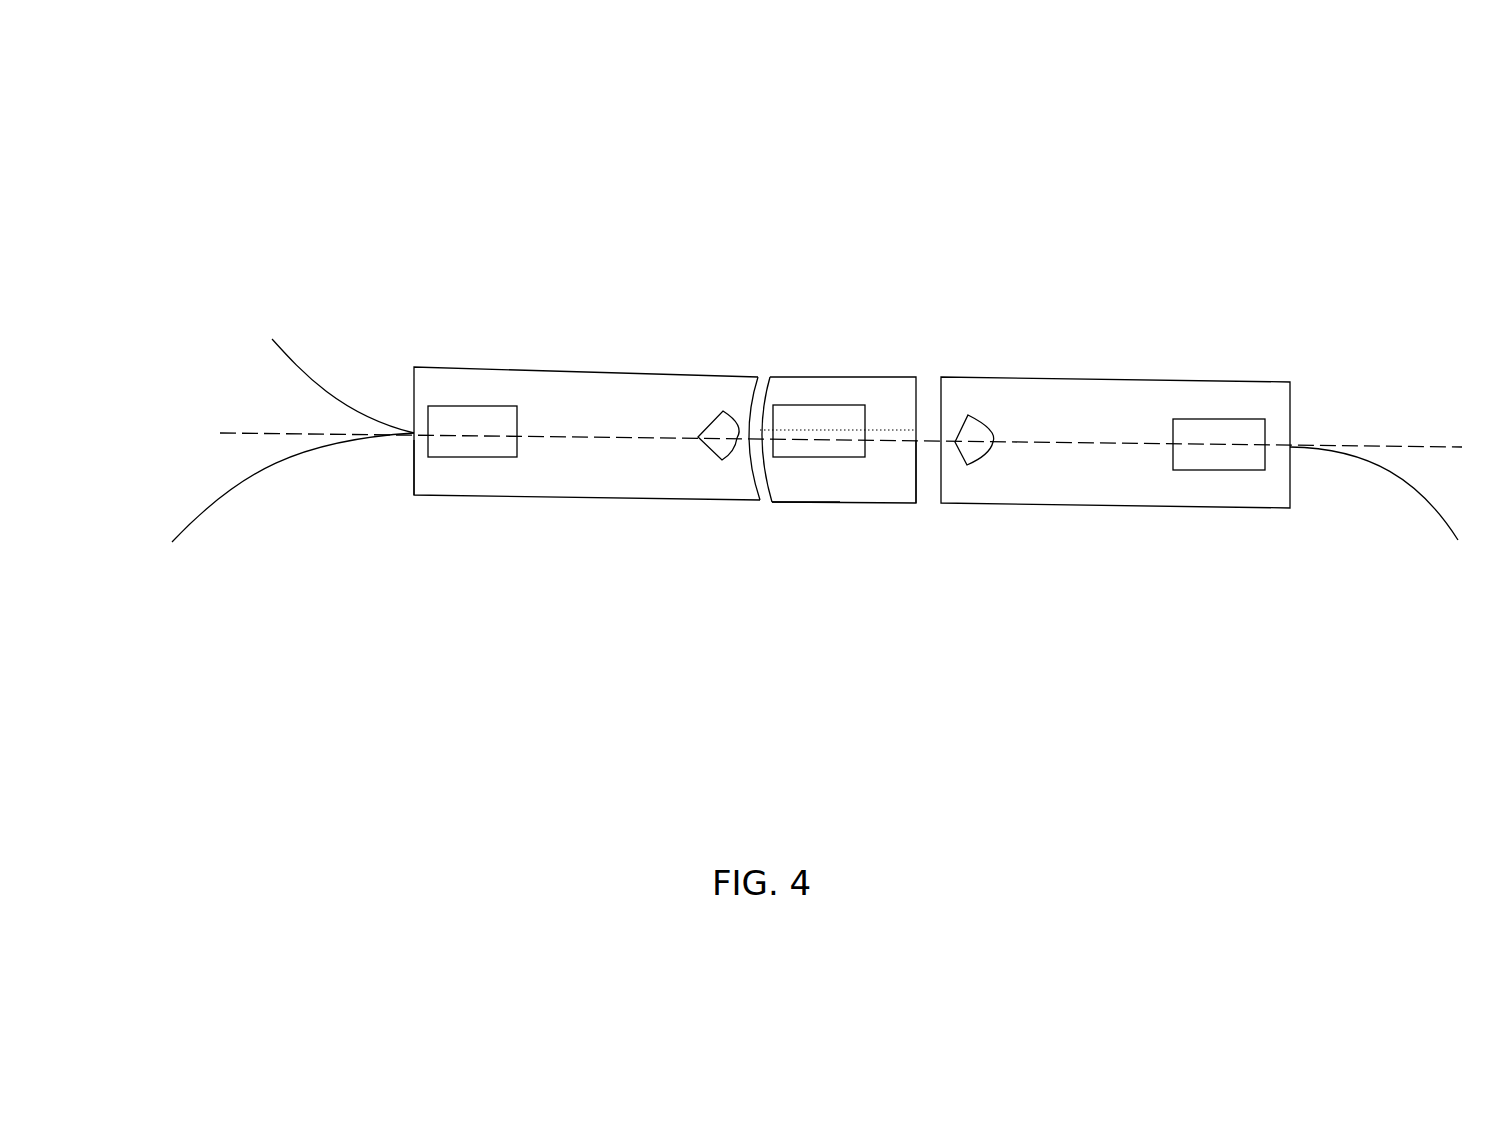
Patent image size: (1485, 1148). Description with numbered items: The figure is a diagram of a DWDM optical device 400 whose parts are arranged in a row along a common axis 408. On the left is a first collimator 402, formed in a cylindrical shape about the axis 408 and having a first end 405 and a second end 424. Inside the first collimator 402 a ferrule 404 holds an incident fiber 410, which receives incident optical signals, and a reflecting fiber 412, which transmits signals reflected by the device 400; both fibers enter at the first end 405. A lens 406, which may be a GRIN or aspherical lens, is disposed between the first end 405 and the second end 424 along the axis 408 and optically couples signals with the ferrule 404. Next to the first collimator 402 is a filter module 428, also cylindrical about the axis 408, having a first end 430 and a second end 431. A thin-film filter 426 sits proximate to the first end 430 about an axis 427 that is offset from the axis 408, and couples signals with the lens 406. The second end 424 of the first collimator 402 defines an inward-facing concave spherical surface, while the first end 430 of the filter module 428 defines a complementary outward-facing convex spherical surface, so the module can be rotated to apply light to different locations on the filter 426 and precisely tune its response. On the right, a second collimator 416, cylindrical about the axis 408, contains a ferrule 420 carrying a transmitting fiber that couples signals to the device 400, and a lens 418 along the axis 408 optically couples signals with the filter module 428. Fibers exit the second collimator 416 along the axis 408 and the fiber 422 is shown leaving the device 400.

The optical device 400 is at (294, 199).
The first collimator 402 is at (642, 459).
The ferrule 404 is at (490, 458).
The first end 405 is at (412, 485).
The lens 406 is at (702, 455).
The axis 408 is at (225, 427).
The incident fiber 410 is at (272, 352).
The reflecting fiber 412 is at (213, 487).
The second collimator 416 is at (1113, 377).
The lens 418 is at (966, 466).
The ferrule 420 is at (1202, 472).
The output optical fiber 422 is at (1433, 518).
The second end 424 is at (754, 375).
The thin-film filter 426 is at (780, 463).
The axis 427 is at (887, 425).
The filter module 428 is at (890, 503).
The first end 430 is at (787, 375).
The second end 431 is at (920, 497).